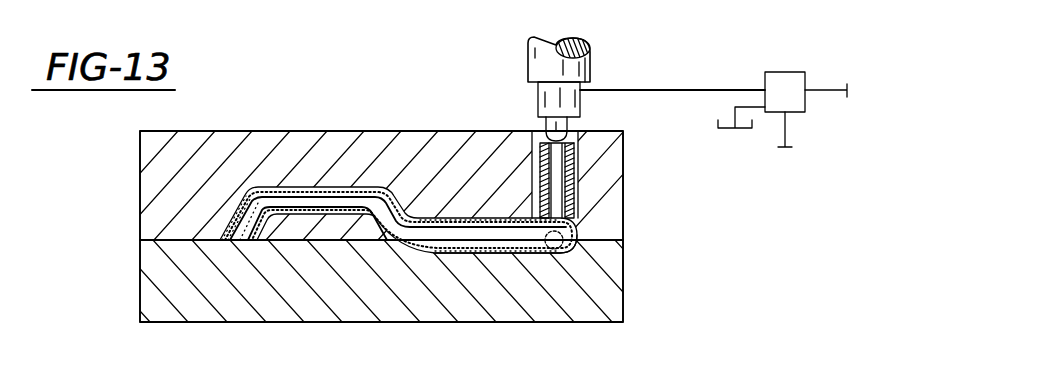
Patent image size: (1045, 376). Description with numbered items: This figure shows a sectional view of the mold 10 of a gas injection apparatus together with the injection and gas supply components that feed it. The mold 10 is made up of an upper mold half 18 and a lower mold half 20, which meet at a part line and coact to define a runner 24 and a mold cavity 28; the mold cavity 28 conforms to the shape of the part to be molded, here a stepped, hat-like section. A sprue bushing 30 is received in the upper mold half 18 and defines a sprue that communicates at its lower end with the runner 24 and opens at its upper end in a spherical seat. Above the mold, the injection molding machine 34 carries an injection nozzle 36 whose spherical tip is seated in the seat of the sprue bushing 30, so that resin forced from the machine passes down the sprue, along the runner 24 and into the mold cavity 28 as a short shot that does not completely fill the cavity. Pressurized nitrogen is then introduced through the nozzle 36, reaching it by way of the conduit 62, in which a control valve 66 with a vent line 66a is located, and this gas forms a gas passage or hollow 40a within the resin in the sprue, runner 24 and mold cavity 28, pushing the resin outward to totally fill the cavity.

The mold 10 is at (645, 300).
The upper mold half 18 is at (140, 183).
The lower mold half 20 is at (140, 287).
The runner 24 is at (496, 244).
The mold cavity 28 is at (327, 193).
The sprue bushing 30 is at (574, 160).
The injection molding machine 34 is at (592, 66).
The injection nozzle 36 is at (538, 105).
The gas passage or hollow 40a is at (282, 208).
The conduit 62 is at (672, 90).
The control valve 66 is at (794, 72).
The vent line 66a is at (718, 113).